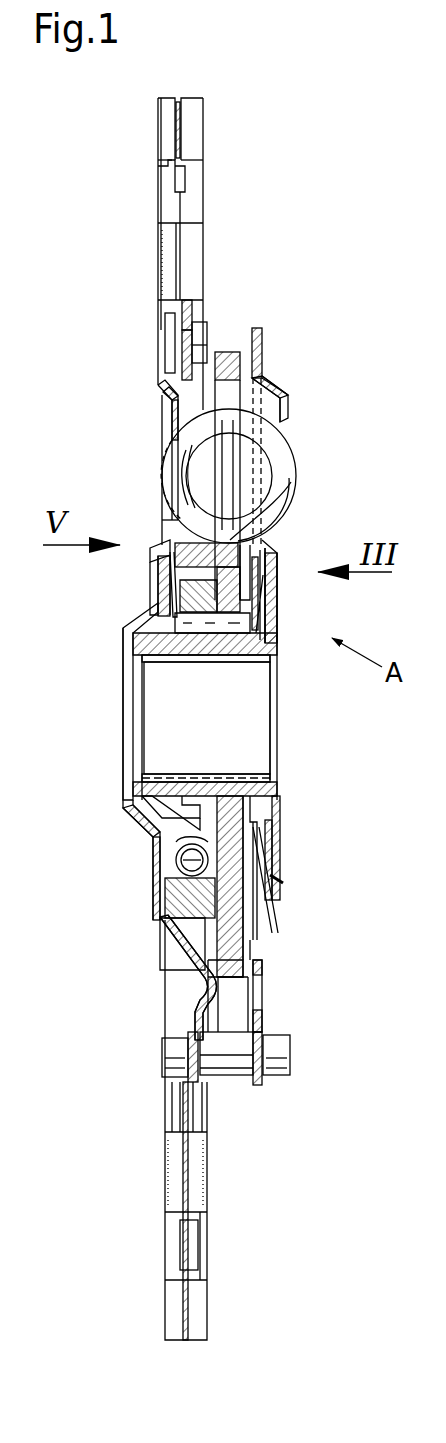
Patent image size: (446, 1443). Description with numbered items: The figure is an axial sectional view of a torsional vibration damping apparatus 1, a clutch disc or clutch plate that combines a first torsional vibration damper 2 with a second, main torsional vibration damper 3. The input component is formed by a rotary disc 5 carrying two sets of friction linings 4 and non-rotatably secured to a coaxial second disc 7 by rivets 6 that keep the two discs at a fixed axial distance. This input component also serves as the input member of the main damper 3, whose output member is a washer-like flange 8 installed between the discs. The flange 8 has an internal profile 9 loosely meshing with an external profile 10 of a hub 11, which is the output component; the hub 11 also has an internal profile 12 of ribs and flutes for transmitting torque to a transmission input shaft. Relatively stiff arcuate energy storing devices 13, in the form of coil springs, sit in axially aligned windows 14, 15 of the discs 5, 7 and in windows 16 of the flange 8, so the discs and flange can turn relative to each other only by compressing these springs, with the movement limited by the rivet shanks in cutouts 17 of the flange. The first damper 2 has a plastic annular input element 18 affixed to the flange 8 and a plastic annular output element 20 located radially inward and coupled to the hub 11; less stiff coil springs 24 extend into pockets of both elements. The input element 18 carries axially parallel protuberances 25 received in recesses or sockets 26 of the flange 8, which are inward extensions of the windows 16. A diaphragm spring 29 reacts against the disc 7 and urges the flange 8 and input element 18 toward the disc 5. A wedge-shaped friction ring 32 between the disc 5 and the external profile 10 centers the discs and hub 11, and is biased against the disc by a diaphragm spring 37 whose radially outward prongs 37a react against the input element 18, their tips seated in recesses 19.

The torsional vibration damping apparatus 1 is at (258, 125).
The first torsional vibration damper 2 is at (140, 856).
The main torsional vibration damper 3 is at (152, 471).
The friction linings 4 is at (192, 100).
The rotary disc 5 is at (170, 393).
The rivets 6 is at (237, 1068).
The second disc 7 is at (272, 387).
The flange 8 is at (235, 959).
The internal profile 9 is at (233, 803).
The external profile 10 is at (228, 628).
The hub 11 is at (252, 740).
The internal profile 12 is at (273, 774).
The arcuate energy storing devices 13 is at (279, 442).
The window 14 is at (198, 463).
The window 15 is at (256, 478).
The windows 16 is at (230, 466).
The cutouts 17 is at (233, 1019).
The annular input element 18 is at (186, 908).
The recesses 19 is at (162, 548).
The annular output element 20 is at (199, 613).
The energy storing devices 24 is at (180, 868).
The protuberances 25 is at (250, 520).
The recesses or sockets 26 is at (255, 556).
The diaphragm spring 29 is at (272, 879).
The friction ring 32 is at (147, 803).
The diaphragm spring 37 is at (172, 615).
The prongs 37a is at (162, 588).